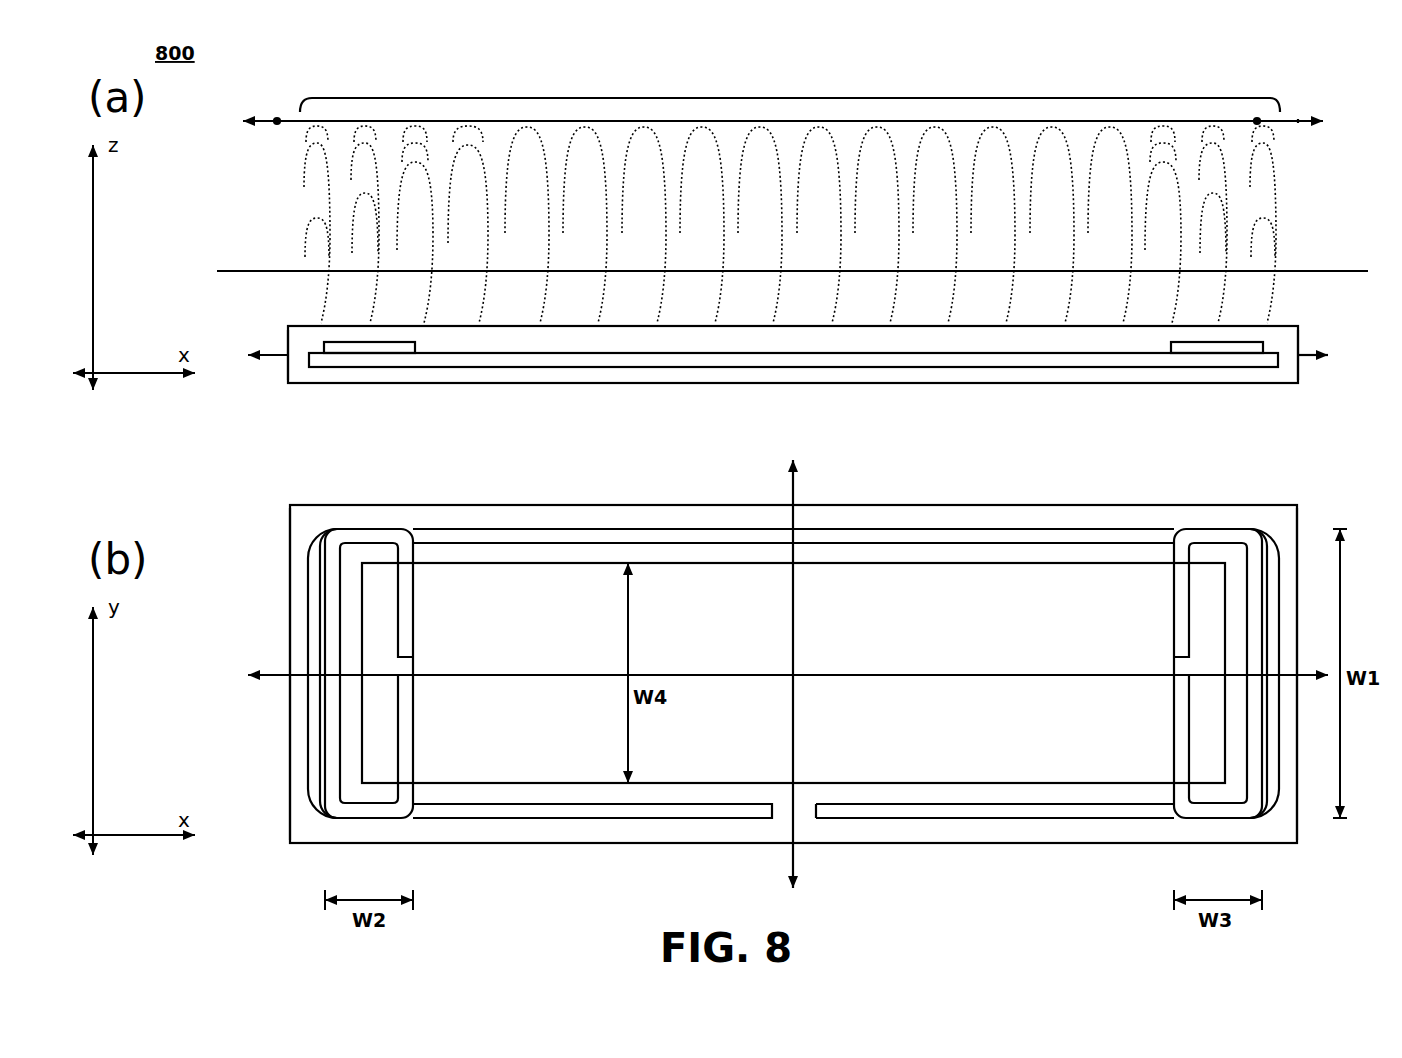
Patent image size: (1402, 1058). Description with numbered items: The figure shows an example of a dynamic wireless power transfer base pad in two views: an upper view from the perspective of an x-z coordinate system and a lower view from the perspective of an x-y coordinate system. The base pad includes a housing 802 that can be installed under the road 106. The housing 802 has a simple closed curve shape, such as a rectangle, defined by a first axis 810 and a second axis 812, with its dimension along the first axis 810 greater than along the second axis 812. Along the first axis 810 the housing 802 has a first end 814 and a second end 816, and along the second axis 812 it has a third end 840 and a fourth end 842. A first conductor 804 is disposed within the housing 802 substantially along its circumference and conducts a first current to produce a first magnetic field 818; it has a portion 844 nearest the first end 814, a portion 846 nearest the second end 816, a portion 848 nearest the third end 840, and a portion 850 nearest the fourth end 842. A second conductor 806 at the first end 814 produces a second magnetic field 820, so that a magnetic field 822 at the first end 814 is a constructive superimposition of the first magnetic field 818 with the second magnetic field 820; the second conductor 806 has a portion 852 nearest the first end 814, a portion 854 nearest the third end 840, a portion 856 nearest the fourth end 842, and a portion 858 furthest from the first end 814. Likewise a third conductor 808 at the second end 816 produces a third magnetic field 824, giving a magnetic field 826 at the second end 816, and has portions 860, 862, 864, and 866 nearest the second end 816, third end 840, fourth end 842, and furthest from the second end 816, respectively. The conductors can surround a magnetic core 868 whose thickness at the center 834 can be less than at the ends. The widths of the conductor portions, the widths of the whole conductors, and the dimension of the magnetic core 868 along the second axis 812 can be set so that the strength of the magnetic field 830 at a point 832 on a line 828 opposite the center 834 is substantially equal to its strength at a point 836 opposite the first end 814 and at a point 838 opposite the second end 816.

The road 106 is at (1330, 271).
The housing 802 is at (1298, 333).
The first conductor 804 is at (907, 360).
The second conductor 806 is at (358, 348).
The third conductor 808 is at (1196, 350).
The first axis 810 is at (262, 355).
The second axis 812 is at (797, 485).
The first end 814 is at (305, 378).
The second end 816 is at (1278, 378).
The first magnetic field 818 is at (1287, 249).
The second magnetic field 820 is at (290, 180).
The magnetic field at the first end 822 is at (270, 133).
The third magnetic field 824 is at (1292, 176).
The magnetic field at the second end 826 is at (1278, 134).
The line 828 is at (1298, 121).
The magnetic field 830 is at (800, 98).
The point 832 is at (815, 121).
The center 834 is at (762, 360).
The point 836 is at (277, 121).
The point 838 is at (1257, 121).
The third end 840 is at (805, 827).
The fourth end 842 is at (752, 513).
The portion 844 is at (315, 546).
The portion 846 is at (1272, 748).
The portion 848 is at (818, 805).
The portion 850 is at (937, 540).
The portion 852 is at (330, 778).
The portion 854 is at (378, 820).
The portion 856 is at (358, 533).
The portion 858 is at (412, 687).
The portion 860 is at (1253, 620).
The portion 862 is at (1218, 818).
The portion 864 is at (1213, 535).
The portion 866 is at (1170, 685).
The magnetic core 868 is at (1078, 745).